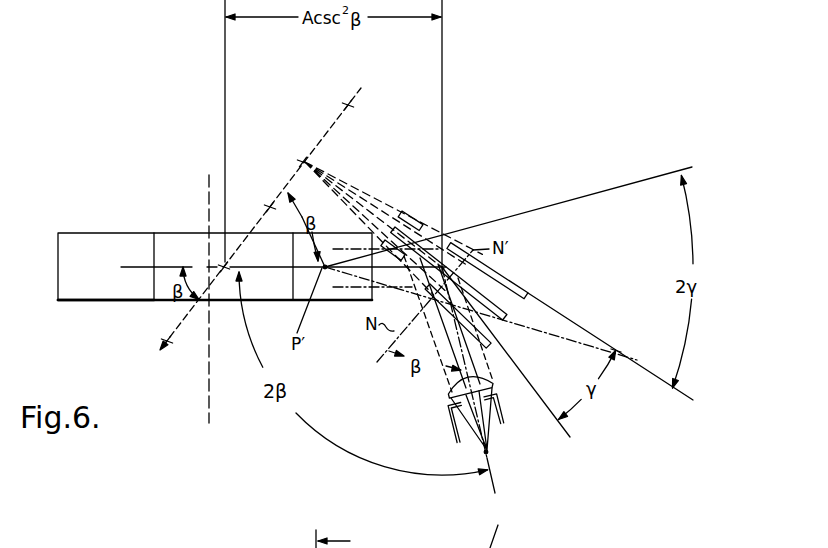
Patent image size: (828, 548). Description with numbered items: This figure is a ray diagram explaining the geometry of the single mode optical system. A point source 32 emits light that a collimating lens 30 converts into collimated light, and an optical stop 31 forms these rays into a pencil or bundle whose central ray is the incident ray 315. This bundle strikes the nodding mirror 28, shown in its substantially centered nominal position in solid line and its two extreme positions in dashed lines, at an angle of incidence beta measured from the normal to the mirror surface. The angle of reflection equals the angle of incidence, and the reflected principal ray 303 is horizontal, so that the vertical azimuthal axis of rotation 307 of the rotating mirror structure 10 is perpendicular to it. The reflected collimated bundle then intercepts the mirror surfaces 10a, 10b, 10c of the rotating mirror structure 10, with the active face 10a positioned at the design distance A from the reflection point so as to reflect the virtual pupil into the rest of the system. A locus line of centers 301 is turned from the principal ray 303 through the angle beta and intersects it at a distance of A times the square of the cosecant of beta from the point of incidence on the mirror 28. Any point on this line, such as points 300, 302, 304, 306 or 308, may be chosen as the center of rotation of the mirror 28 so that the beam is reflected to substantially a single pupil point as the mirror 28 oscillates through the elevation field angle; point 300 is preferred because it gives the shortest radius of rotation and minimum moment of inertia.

The rotating mirror structure 10 is at (106, 232).
The mirror surface 10a is at (332, 300).
The mirror surface 10b is at (270, 300).
The mirror surface 10c is at (107, 300).
The nodding mirror 28 is at (533, 290).
The collimating lens 30 is at (447, 396).
The optical stop 31 is at (502, 412).
The point source 32 is at (489, 453).
The point on locus line 300 is at (302, 160).
The locus line of centers 301 is at (328, 136).
The point on locus line 302 is at (352, 80).
The principal ray 303 is at (326, 265).
The point on locus line 304 is at (268, 205).
The point on locus line 306 is at (228, 264).
The axis of rotation 307 is at (209, 222).
The point on locus line 308 is at (171, 342).
The incident ray 315 is at (486, 372).